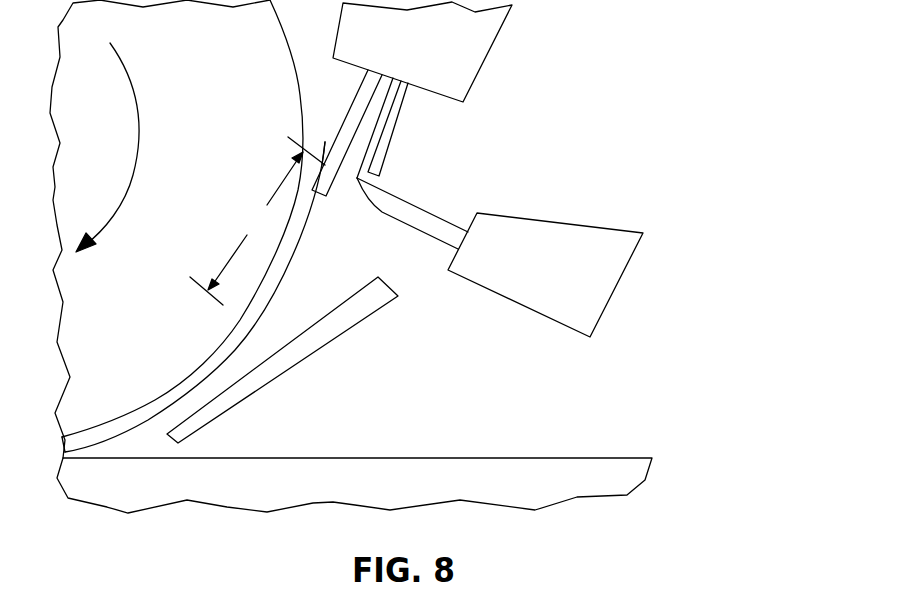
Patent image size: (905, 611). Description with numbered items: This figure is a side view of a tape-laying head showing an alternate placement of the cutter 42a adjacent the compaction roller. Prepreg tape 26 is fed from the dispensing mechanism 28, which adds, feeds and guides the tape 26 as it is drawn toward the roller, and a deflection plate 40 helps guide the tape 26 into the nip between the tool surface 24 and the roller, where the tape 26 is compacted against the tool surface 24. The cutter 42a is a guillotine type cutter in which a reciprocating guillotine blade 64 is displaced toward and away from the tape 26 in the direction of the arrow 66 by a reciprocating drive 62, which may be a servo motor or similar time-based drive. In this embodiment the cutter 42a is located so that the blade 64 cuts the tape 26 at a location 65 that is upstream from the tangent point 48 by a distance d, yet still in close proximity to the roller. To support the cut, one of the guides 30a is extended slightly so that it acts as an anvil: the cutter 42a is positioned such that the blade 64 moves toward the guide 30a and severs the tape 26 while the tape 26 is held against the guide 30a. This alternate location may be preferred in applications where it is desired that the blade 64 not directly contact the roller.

The tool surface 24 is at (573, 457).
The prepreg tape 26 is at (368, 132).
The dispensing mechanism 28 is at (463, 36).
The guide 30a is at (362, 108).
The deflection plate 40 is at (307, 342).
The cutter 42a is at (633, 283).
The tangent point 48 is at (222, 322).
The reciprocating drive 62 is at (597, 257).
The guillotine blade 64 is at (446, 232).
The cut location 65 is at (327, 149).
The direction of blade movement 66 is at (353, 228).
The distance d is at (257, 221).